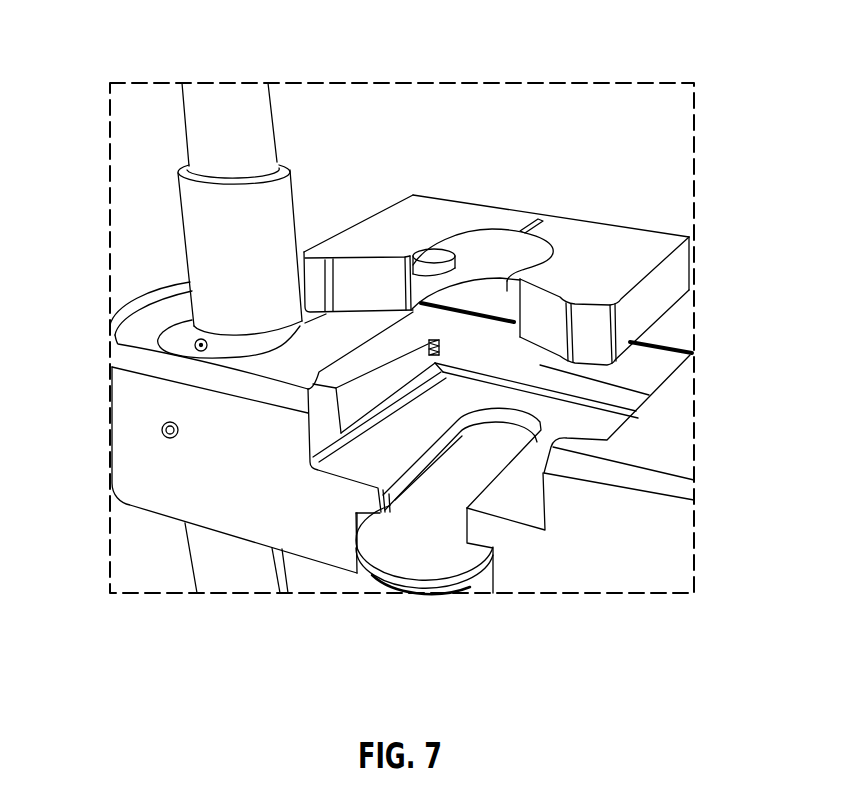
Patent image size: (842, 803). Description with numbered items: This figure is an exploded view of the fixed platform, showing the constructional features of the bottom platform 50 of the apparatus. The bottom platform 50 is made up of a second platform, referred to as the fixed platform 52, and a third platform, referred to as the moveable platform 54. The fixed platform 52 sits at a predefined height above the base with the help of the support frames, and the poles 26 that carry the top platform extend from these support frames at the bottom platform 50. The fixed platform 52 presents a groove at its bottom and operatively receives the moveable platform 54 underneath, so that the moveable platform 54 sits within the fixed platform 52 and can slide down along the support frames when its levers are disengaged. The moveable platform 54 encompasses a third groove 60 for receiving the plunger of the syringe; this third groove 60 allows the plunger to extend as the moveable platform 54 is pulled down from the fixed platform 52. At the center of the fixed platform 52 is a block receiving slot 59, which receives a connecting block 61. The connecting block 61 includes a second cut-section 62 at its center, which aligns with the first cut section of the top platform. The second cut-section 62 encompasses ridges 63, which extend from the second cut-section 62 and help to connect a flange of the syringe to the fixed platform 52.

The poles 26 is at (212, 120).
The bottom platform 50 is at (238, 512).
The fixed platform 52 is at (205, 379).
The moveable platform 54 is at (383, 576).
The block receiving slot 59 is at (618, 432).
The third groove 60 is at (455, 566).
The connecting block 61 is at (627, 262).
The second cut-section 62 is at (485, 240).
The ridges 63 is at (440, 249).